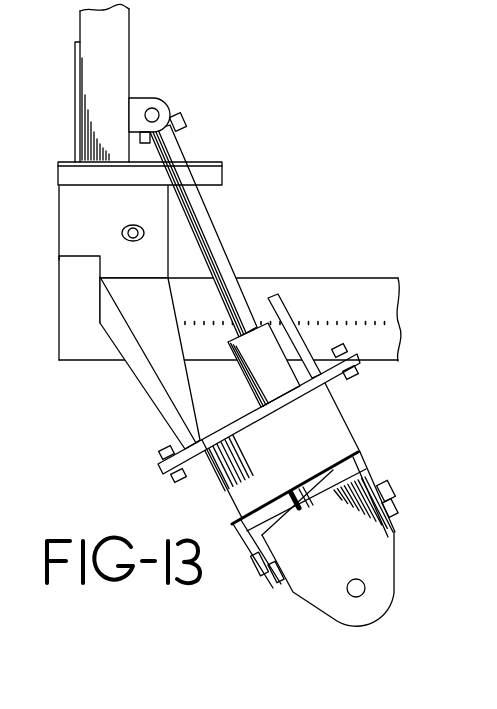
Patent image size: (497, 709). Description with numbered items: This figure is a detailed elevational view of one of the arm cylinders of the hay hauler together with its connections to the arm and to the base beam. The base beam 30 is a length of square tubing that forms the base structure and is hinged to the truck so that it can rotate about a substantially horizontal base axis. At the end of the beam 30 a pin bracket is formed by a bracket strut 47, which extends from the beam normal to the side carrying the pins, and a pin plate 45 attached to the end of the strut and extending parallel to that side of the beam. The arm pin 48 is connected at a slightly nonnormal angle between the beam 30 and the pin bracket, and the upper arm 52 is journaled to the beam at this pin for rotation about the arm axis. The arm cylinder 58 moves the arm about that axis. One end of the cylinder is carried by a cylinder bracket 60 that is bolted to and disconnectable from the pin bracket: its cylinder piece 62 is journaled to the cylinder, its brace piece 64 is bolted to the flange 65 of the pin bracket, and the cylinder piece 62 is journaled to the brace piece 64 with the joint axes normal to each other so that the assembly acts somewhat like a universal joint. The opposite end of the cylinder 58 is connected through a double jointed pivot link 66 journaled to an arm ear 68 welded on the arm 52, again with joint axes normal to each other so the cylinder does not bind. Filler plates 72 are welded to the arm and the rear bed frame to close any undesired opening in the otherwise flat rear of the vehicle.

The base beam 30 is at (340, 285).
The pin plate 45 is at (70, 210).
The bracket strut 47 is at (59, 297).
The arm pin 48 is at (133, 225).
The upper arm 52 is at (118, 38).
The arm cylinder 58 is at (218, 240).
The cylinder bracket 60 is at (374, 461).
The cylinder piece 62 is at (385, 576).
The brace piece 64 is at (335, 422).
The flange 65 is at (182, 438).
The pivot link 66 is at (186, 128).
The arm ear 68 is at (139, 103).
The filler plate 72 is at (76, 72).